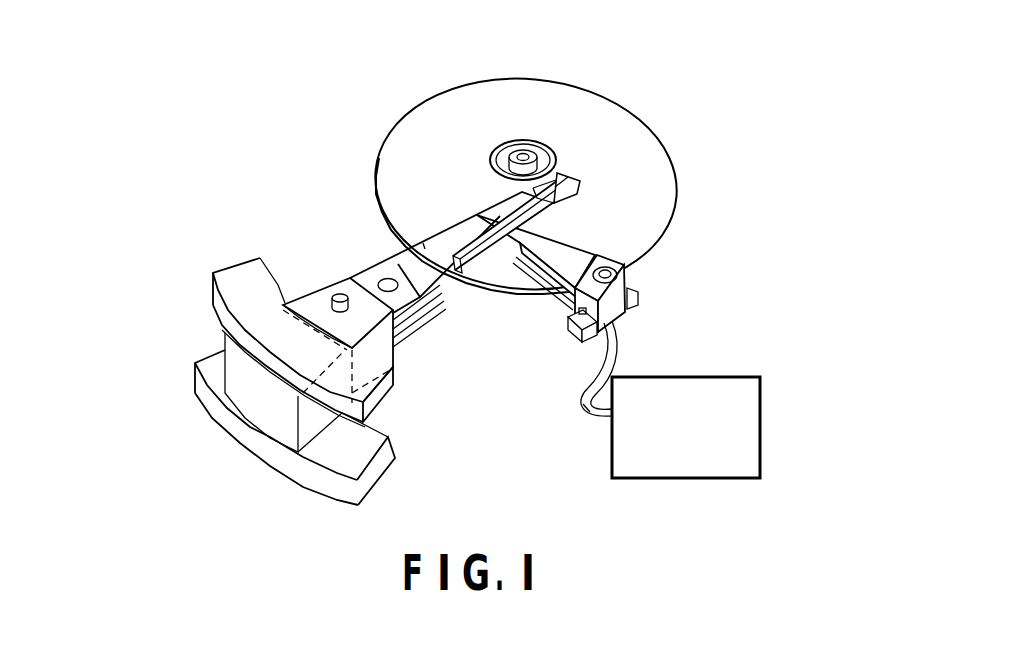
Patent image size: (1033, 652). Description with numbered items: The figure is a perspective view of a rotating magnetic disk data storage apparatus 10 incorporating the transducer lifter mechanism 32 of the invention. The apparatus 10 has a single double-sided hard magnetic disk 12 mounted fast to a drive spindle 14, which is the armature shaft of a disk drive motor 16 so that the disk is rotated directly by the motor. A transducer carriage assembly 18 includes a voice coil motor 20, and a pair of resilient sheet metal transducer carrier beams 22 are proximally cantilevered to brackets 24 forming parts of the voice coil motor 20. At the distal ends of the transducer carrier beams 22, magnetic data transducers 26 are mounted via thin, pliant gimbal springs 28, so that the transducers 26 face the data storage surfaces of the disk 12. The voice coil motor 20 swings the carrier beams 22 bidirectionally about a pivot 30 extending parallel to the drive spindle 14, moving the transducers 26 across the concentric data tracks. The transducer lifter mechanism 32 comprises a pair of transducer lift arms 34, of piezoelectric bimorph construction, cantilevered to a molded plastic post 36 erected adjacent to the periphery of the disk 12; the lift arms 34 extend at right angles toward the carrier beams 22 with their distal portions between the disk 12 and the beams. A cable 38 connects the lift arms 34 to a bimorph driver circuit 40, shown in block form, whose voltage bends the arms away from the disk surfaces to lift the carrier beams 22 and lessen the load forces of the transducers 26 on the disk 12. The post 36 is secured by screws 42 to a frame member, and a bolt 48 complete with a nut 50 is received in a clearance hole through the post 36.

The rotating magnetic disk data storage apparatus 10 is at (225, 208).
The hard magnetic disk 12 is at (468, 110).
The drive spindle 14 is at (530, 146).
The disk drive motor 16 is at (512, 288).
The transducer carriage assembly 18 is at (370, 267).
The voice coil motor 20 is at (302, 300).
The transducer carrier beams 22 is at (445, 250).
The brackets 24 is at (418, 307).
The magnetic data transducers 26 is at (577, 198).
The gimbal springs 28 is at (577, 177).
The pivot 30 is at (336, 296).
The transducer lifter mechanism 32 is at (658, 270).
The transducer lift arms 34 is at (625, 235).
The post 36 is at (627, 308).
The cable 38 is at (583, 404).
The bimorph driver circuit 40 is at (760, 423).
The screws 42 is at (612, 344).
The bolt 48 is at (618, 272).
The nut 50 is at (639, 281).